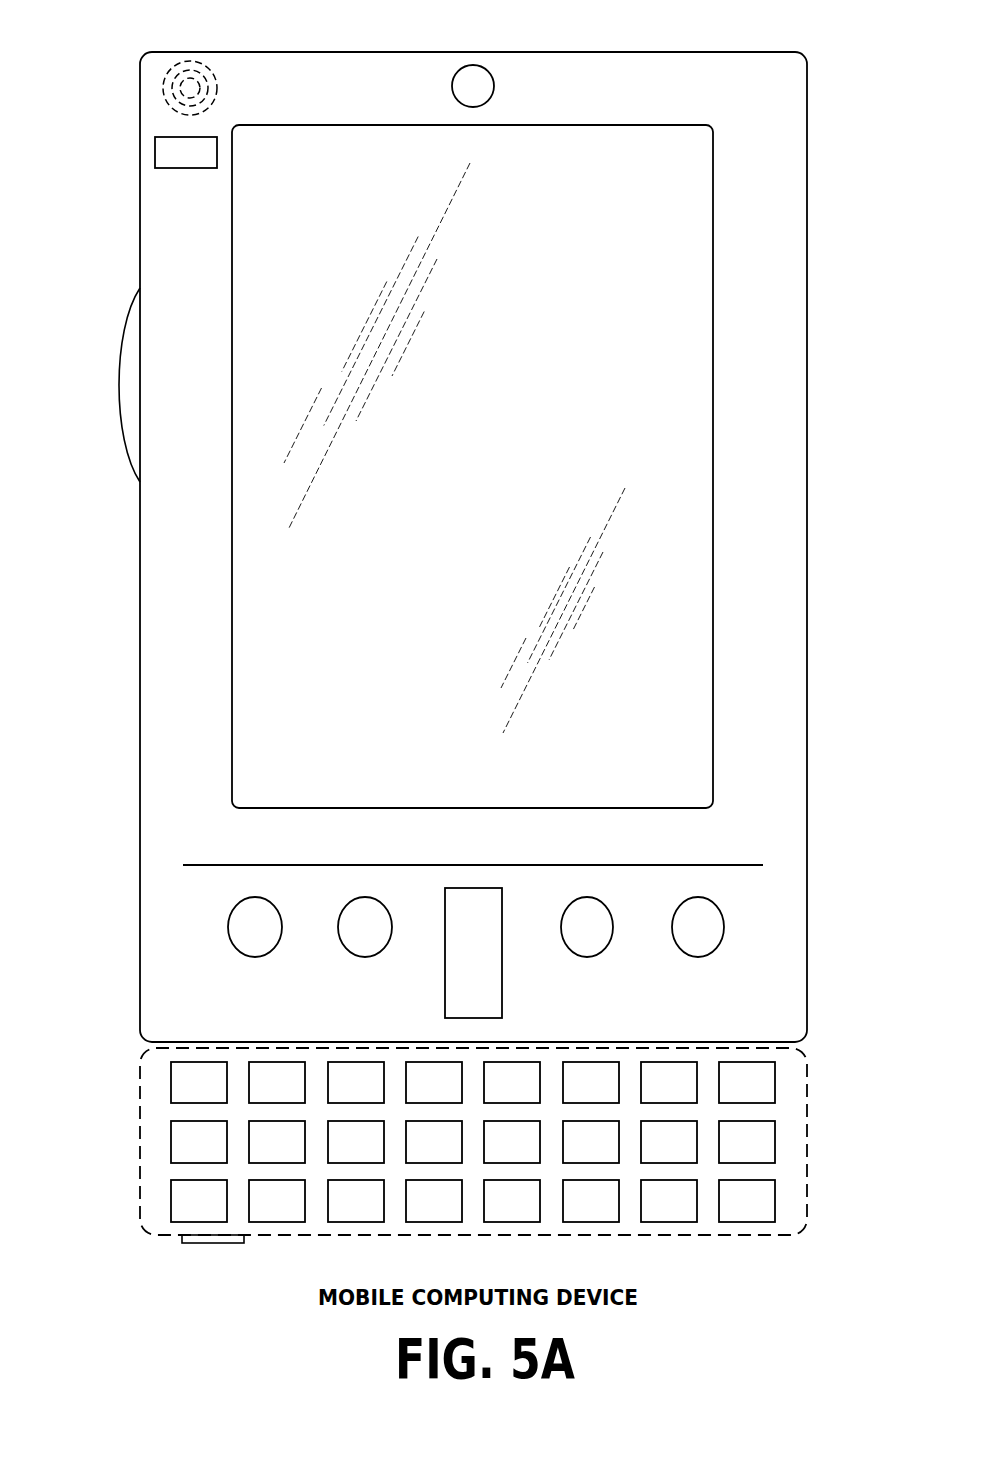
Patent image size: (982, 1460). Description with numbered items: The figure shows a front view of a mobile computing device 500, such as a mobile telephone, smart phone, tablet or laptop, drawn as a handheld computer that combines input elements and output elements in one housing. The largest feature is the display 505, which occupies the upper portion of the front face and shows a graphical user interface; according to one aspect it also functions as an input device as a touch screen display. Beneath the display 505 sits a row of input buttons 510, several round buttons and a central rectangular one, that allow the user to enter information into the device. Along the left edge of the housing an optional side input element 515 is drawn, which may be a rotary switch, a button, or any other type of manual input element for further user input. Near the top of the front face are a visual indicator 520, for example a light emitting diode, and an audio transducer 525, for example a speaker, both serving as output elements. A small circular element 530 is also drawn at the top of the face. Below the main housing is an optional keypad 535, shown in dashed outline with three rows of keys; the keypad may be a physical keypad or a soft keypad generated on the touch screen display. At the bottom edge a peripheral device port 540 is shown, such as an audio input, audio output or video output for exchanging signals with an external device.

The mobile computing device 500 is at (770, 51).
The display 505 is at (255, 643).
The input buttons 510 is at (256, 958).
The side input element 515 is at (118, 385).
The visual indicator 520 is at (155, 152).
The audio transducer 525 is at (158, 91).
The camera 530 is at (472, 65).
The keypad 535 is at (150, 1141).
The peripheral device port 540 is at (190, 1245).